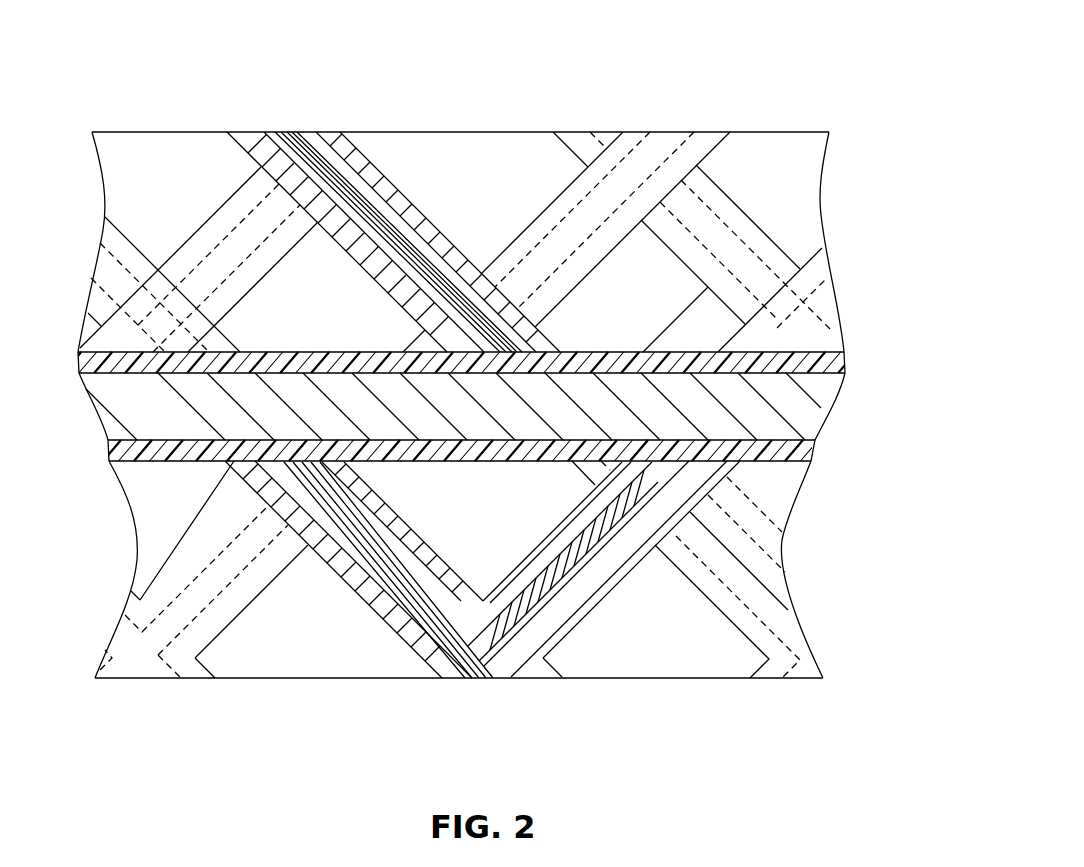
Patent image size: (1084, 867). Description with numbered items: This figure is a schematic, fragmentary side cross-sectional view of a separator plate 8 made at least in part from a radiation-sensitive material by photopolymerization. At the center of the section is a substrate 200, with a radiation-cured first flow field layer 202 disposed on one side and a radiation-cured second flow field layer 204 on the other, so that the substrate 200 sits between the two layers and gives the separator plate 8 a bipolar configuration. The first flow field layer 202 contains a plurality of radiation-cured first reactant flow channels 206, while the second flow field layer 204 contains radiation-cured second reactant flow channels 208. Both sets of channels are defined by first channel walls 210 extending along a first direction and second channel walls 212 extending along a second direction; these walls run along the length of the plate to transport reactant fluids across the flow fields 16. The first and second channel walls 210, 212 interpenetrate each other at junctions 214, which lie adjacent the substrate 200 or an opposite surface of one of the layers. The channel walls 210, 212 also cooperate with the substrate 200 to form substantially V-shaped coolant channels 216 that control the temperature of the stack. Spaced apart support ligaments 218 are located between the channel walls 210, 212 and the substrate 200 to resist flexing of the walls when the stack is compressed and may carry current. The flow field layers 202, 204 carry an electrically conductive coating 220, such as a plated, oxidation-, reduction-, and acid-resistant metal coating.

The separator plate 8 is at (800, 110).
The flow field 16 is at (490, 108).
The substrate 200 is at (849, 461).
The first flow field layer 202 is at (849, 133).
The second flow field layer 204 is at (866, 462).
The first reactant flow channels 206 is at (440, 178).
The second reactant flow channels 208 is at (275, 655).
The first channel walls 210 is at (466, 259).
The second channel walls 212 is at (552, 521).
The junctions 214 is at (484, 599).
The coolant channels 216 is at (497, 440).
The support ligaments 218 is at (272, 240).
The electrically conductive coating 220 is at (368, 275).